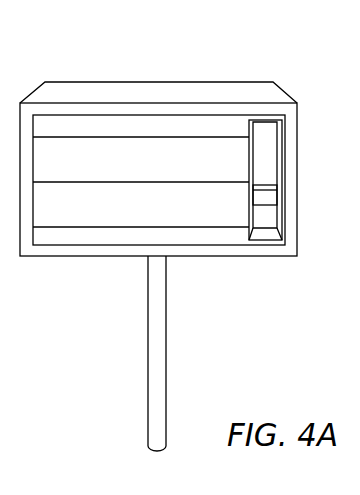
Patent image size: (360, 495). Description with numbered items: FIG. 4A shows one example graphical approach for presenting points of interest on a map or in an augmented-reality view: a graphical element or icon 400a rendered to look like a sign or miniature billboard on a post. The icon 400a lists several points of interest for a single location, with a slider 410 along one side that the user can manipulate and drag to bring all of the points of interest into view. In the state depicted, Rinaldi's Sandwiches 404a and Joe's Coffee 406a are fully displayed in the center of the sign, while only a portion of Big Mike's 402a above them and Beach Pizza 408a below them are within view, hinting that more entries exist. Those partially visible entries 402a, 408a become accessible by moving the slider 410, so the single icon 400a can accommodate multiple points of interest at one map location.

The graphical element or icon 400a is at (188, 238).
The Big Mike's point of interest 402a is at (125, 127).
The Rinaldi's Sandwiches point of interest 404a is at (75, 143).
The Joe's Coffee point of interest 406a is at (87, 210).
The Beach Pizza point of interest 408a is at (112, 237).
The slider 410 is at (268, 193).